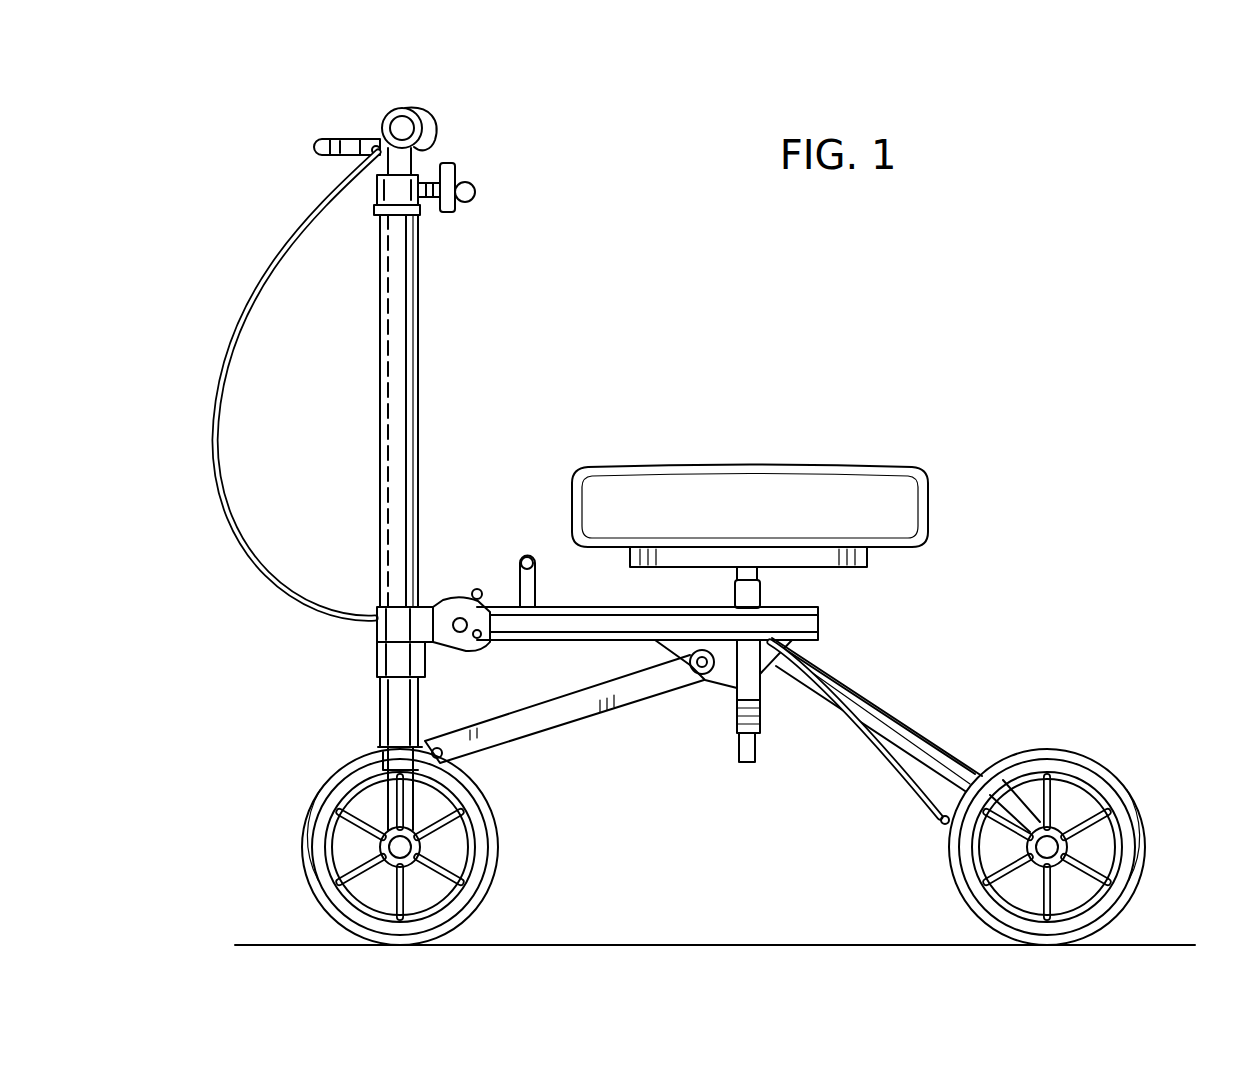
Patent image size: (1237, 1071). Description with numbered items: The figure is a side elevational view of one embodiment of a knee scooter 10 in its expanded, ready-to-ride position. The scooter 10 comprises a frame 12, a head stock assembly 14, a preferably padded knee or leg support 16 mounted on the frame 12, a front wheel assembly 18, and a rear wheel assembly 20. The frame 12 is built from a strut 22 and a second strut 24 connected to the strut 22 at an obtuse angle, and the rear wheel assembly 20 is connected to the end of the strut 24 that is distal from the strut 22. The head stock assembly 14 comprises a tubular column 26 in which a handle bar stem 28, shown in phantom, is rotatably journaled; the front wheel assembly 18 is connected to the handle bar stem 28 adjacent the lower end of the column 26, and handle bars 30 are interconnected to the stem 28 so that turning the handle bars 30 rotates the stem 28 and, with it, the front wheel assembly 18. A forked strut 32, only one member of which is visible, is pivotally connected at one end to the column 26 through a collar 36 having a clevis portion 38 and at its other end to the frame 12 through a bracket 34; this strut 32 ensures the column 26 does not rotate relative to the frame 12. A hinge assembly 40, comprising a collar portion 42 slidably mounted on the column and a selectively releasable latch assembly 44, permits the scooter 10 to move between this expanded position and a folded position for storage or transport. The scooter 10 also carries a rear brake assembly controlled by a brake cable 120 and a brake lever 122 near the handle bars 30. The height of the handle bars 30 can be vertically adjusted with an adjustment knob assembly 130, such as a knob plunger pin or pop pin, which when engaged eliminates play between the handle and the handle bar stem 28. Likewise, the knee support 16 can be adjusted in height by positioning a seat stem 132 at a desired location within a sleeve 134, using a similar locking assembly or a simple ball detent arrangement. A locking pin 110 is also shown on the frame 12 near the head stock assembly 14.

The scooter 10 is at (698, 334).
The frame 12 is at (901, 664).
The head stock assembly 14 is at (460, 296).
The knee or leg support 16 is at (771, 439).
The front wheel assembly 18 is at (520, 798).
The rear wheel assembly 20 is at (1141, 764).
The strut 22 is at (687, 623).
The strut 24 is at (930, 740).
The tubular column 26 is at (428, 492).
The handle bar stem 28 is at (422, 405).
The handle bars 30 is at (418, 107).
The forked strut 32 is at (577, 708).
The bracket 34 is at (730, 670).
The collar 36 is at (380, 742).
The clevis portion 38 is at (423, 745).
The hinge assembly 40 is at (460, 561).
The collar portion 42 is at (397, 630).
The latch assembly 44 is at (457, 608).
The locking pin 110 is at (527, 556).
The brake cable 120 is at (245, 307).
The brake lever 122 is at (335, 140).
The adjustment knob assembly 130 is at (450, 177).
The seat stem 132 is at (748, 757).
The sleeve 134 is at (760, 713).